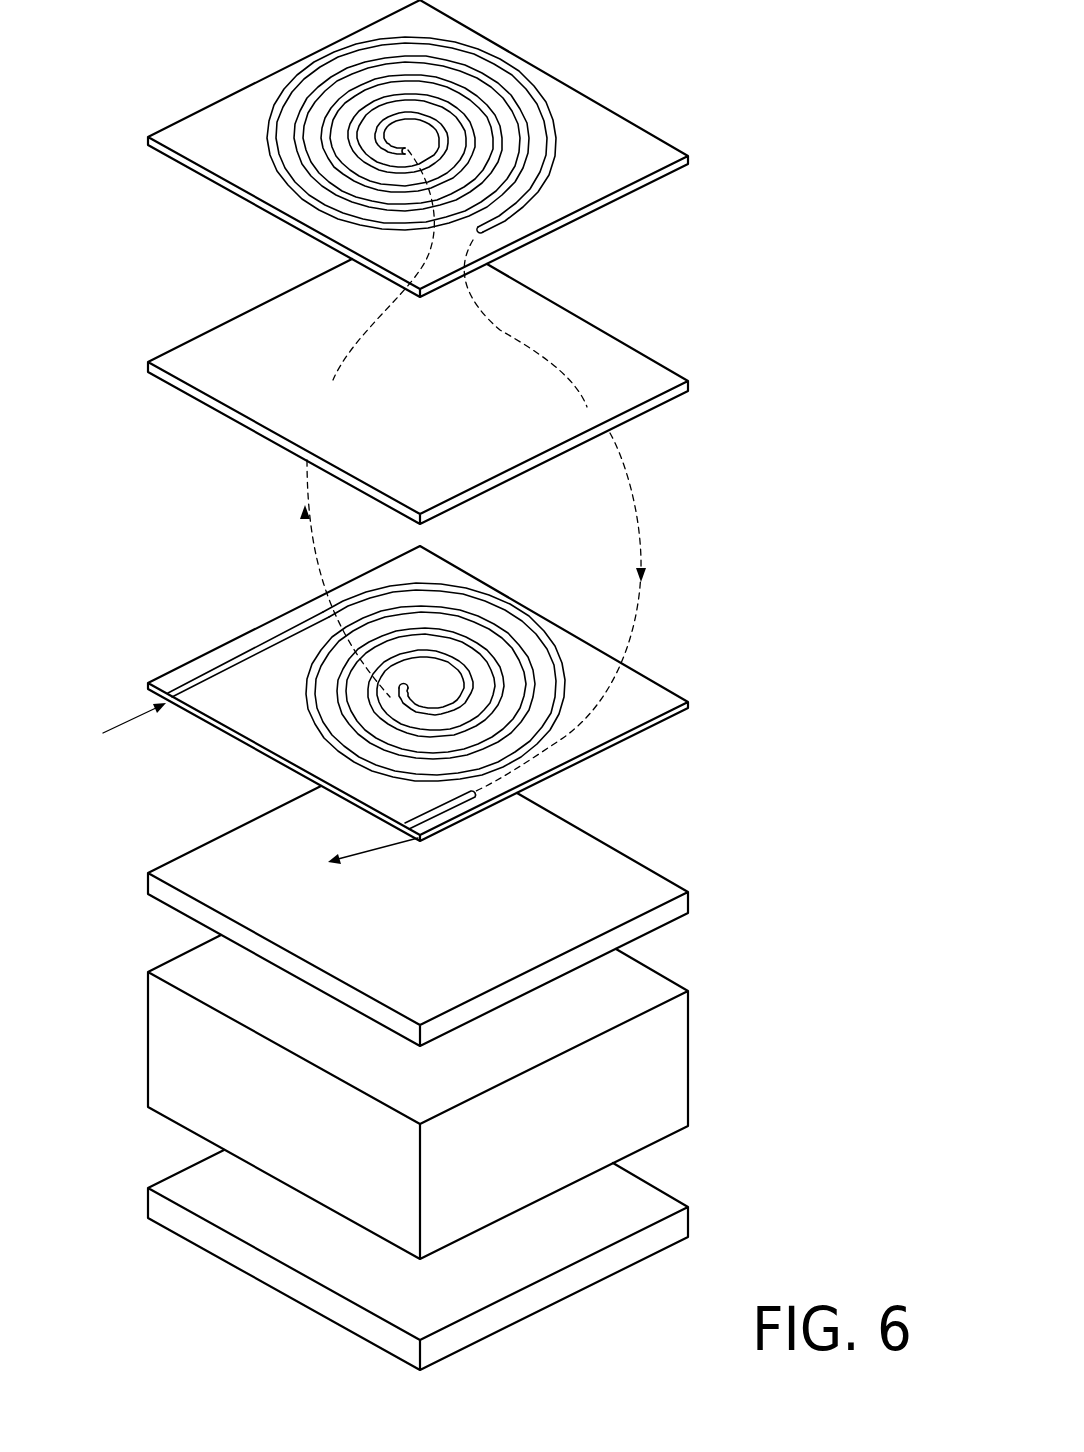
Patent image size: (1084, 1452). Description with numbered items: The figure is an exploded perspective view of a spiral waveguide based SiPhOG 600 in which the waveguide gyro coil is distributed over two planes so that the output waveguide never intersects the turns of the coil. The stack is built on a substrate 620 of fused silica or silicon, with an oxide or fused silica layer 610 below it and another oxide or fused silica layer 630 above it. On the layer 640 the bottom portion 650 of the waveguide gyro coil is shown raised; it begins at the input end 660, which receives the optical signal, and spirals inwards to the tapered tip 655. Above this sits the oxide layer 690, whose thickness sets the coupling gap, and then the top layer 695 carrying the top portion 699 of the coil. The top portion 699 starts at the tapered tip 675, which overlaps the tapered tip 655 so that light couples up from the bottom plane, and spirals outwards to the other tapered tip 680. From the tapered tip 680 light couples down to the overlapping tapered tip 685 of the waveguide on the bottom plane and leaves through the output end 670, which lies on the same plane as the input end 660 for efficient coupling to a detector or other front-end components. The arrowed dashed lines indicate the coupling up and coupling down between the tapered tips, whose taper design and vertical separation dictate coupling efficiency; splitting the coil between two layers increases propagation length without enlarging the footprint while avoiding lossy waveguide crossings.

The spiral waveguide based SiPhOG 600 is at (765, 44).
The oxide or fused silica layer 610 is at (172, 1176).
The substrate 620 is at (172, 960).
The oxide or fused silica layer 630 is at (172, 861).
The layer 640 is at (172, 671).
The bottom portion of waveguide gyro coil 650 is at (543, 641).
The tapered tip 655 is at (392, 695).
The input end 660 is at (128, 720).
The output end 670 is at (360, 852).
The tapered tip 675 is at (407, 147).
The tapered tip 680 is at (481, 247).
The tapered tip 685 is at (475, 797).
The oxide layer 690 is at (172, 350).
The top layer 695 is at (172, 125).
The top portion of waveguide gyro coil 699 is at (543, 103).